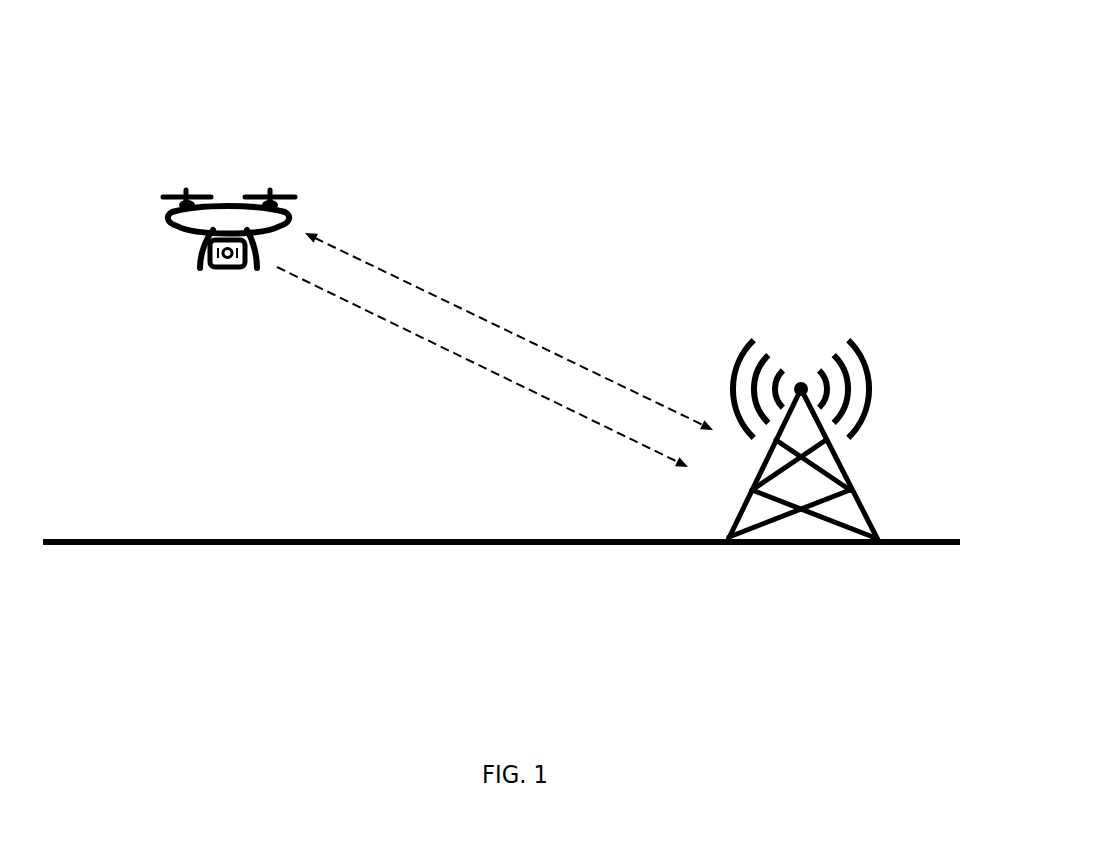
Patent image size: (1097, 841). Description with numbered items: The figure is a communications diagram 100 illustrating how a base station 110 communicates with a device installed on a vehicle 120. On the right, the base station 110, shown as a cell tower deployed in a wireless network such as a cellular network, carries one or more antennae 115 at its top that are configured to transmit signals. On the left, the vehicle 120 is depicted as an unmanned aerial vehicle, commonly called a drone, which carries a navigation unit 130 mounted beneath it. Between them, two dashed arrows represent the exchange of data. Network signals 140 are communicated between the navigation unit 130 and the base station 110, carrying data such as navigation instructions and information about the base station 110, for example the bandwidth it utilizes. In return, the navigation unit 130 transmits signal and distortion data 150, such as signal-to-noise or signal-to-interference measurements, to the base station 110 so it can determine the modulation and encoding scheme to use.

The communications diagram 100 is at (754, 68).
The base station 110 is at (860, 488).
The antennae 115 is at (801, 375).
The vehicle 120 is at (229, 243).
The navigation unit 130 is at (225, 275).
The network signals 140 is at (509, 331).
The signal and distortion data 150 is at (482, 375).